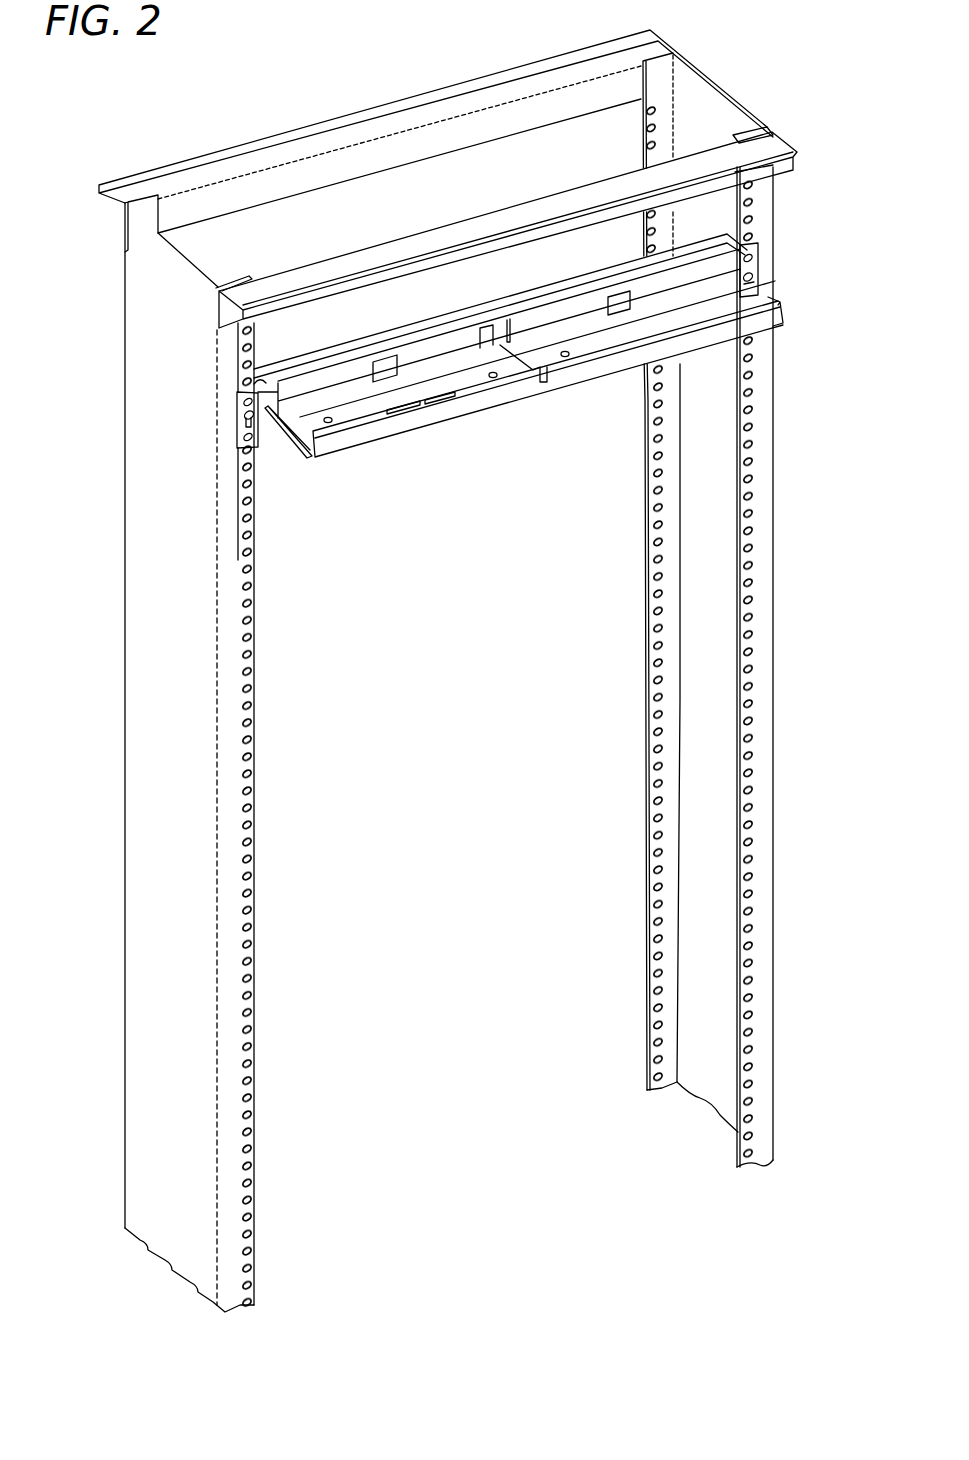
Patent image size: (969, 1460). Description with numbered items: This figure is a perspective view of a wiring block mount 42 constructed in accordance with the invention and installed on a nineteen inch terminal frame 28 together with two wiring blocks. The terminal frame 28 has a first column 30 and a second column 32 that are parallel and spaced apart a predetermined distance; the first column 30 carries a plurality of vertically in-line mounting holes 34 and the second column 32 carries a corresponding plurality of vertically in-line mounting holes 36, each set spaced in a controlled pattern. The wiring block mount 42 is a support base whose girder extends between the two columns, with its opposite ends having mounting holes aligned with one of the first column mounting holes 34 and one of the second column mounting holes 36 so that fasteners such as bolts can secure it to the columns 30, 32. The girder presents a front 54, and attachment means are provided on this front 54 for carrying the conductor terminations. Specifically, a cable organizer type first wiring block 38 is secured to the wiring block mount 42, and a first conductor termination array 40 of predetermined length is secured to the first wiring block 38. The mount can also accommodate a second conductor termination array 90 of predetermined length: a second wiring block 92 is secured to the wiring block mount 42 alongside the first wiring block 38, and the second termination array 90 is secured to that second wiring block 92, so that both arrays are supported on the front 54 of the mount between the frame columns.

The terminal frame 28 is at (450, 682).
The first column 30 is at (745, 610).
The second column 32 is at (163, 542).
The first column mounting holes 34 is at (757, 628).
The second column mounting holes 36 is at (247, 824).
The first wiring block 38 is at (773, 296).
The first conductor termination array 40 is at (778, 322).
The wiring block mount 42 is at (338, 347).
The front of the girder 54 is at (554, 376).
The second conductor termination array 90 is at (333, 450).
The second wiring block 92 is at (287, 430).